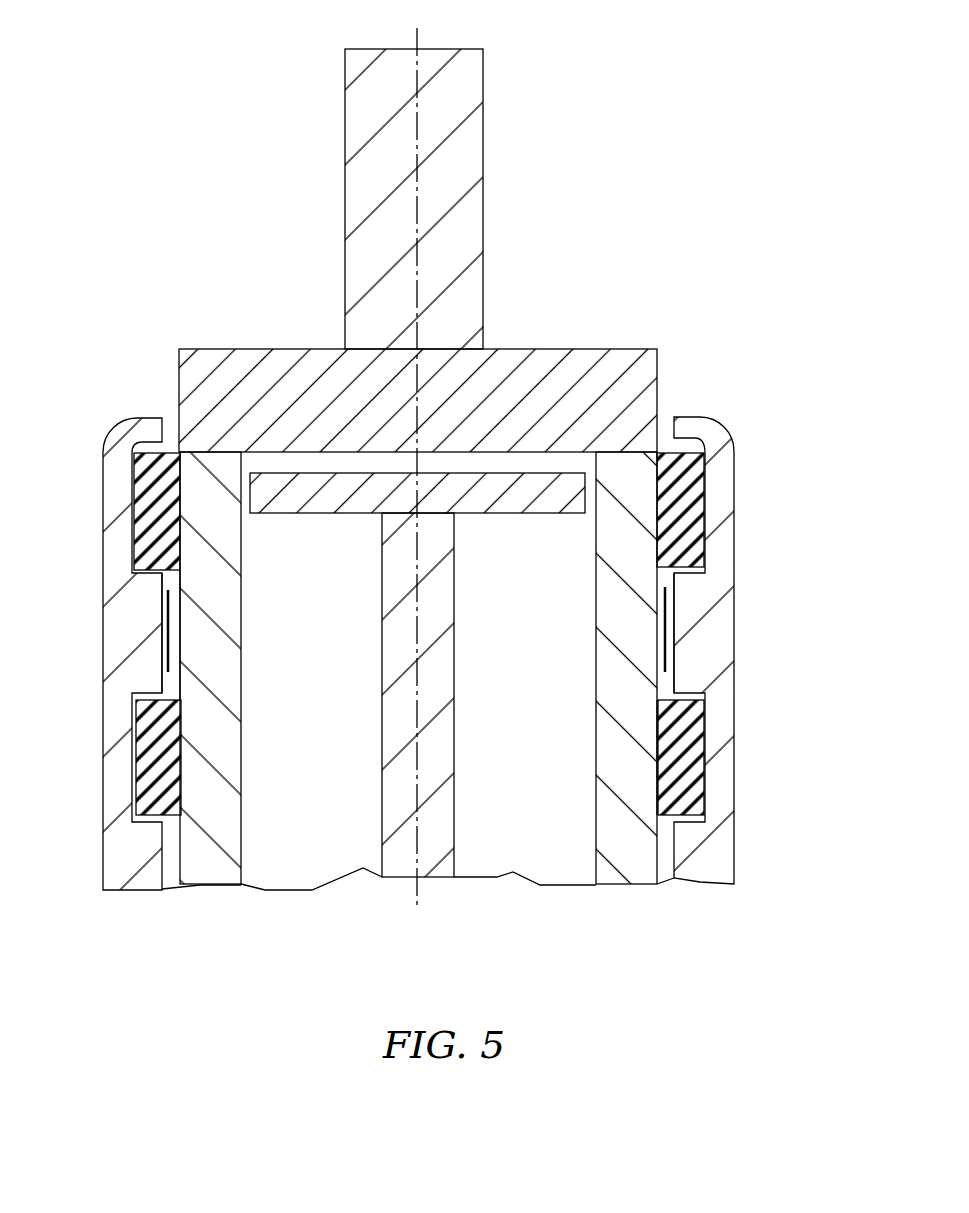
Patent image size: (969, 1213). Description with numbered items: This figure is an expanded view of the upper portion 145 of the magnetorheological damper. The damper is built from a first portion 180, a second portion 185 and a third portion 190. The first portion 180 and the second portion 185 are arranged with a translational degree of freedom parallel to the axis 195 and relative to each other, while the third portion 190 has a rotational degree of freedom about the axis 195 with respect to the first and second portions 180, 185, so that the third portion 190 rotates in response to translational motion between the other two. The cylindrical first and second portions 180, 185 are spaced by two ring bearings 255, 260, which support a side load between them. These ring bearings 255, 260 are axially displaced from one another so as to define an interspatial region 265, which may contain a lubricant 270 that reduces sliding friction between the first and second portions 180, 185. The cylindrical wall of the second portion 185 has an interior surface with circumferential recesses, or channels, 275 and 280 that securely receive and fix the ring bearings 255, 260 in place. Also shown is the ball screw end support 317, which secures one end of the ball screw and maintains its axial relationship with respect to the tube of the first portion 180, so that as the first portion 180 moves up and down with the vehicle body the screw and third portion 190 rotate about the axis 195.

The upper portion 145 is at (693, 96).
The first portion 180 is at (662, 358).
The second portion 185 is at (745, 788).
The third portion 190 is at (462, 810).
The axis 195 is at (413, 890).
The ring bearing 255 is at (656, 550).
The ring bearing 260 is at (657, 730).
The interspatial region 265 is at (182, 577).
The lubricant 270 is at (165, 630).
The circumferential recess 275 is at (705, 482).
The circumferential recess 280 is at (706, 727).
The ball screw end support 317 is at (533, 514).